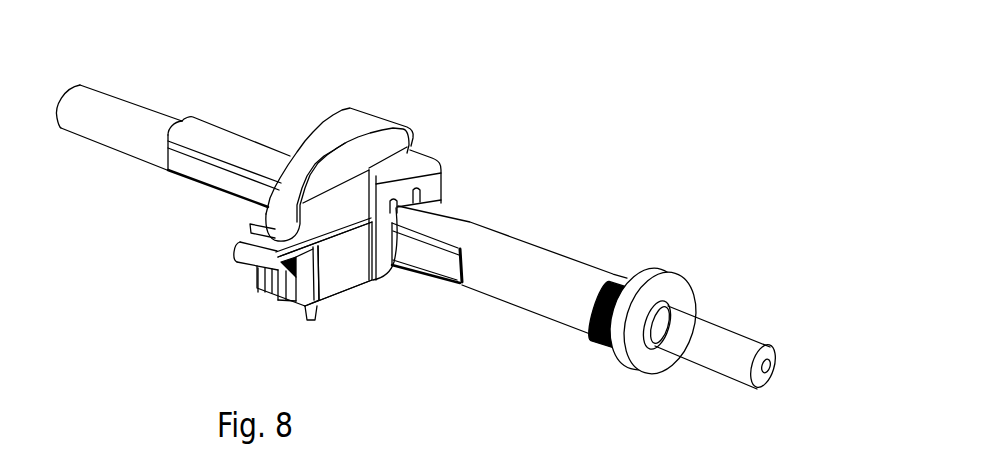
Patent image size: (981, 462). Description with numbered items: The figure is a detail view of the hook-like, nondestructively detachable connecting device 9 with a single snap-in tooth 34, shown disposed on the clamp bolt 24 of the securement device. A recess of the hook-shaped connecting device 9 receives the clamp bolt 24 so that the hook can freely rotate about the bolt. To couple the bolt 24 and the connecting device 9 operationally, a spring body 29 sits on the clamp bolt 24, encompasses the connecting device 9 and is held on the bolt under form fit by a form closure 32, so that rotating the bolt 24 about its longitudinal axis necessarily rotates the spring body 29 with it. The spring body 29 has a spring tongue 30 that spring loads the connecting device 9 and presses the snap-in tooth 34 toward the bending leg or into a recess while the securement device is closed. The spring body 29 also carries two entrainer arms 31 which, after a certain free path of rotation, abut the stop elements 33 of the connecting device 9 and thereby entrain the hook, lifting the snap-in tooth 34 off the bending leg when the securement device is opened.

The connecting device 9 is at (312, 242).
The clamp bolt 24 is at (513, 250).
The spring body 29 is at (410, 161).
The spring tongue 30 is at (318, 143).
The entrainer arms 31 is at (343, 263).
The form closure 32 is at (427, 258).
The stop elements 33 is at (262, 285).
The snap-in tooth 34 is at (312, 327).